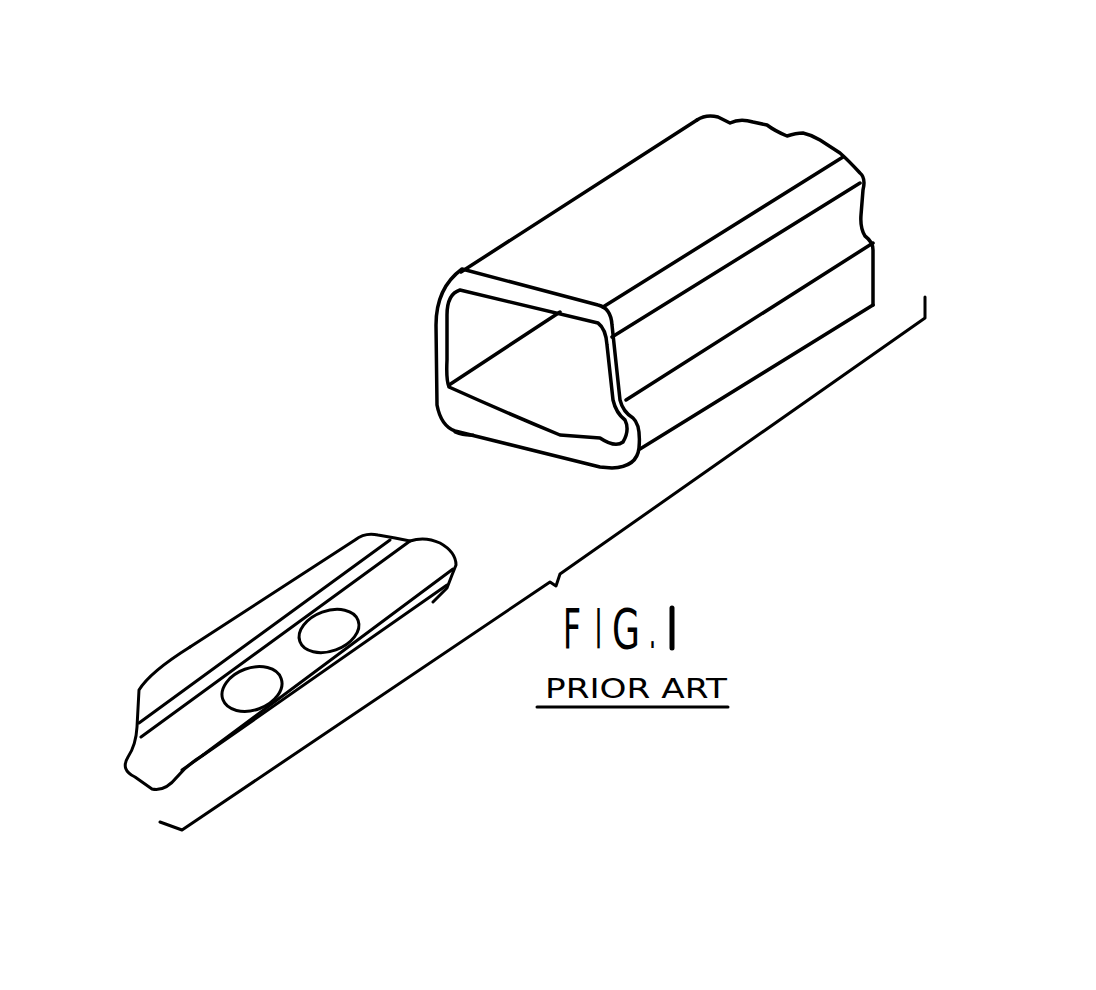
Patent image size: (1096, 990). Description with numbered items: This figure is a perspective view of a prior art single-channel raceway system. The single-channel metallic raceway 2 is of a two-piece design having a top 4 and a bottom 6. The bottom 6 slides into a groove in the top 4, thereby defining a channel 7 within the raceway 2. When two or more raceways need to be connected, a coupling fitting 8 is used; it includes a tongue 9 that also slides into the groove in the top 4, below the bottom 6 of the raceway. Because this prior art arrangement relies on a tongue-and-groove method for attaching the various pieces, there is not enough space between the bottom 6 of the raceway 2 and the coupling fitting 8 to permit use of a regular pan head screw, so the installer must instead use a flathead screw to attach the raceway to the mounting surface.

The single-channel metallic raceway 2 is at (578, 256).
The top 4 is at (740, 172).
The bottom 6 is at (490, 437).
The channel 7 is at (482, 323).
The coupling fitting 8 is at (294, 672).
The tongue 9 is at (418, 556).